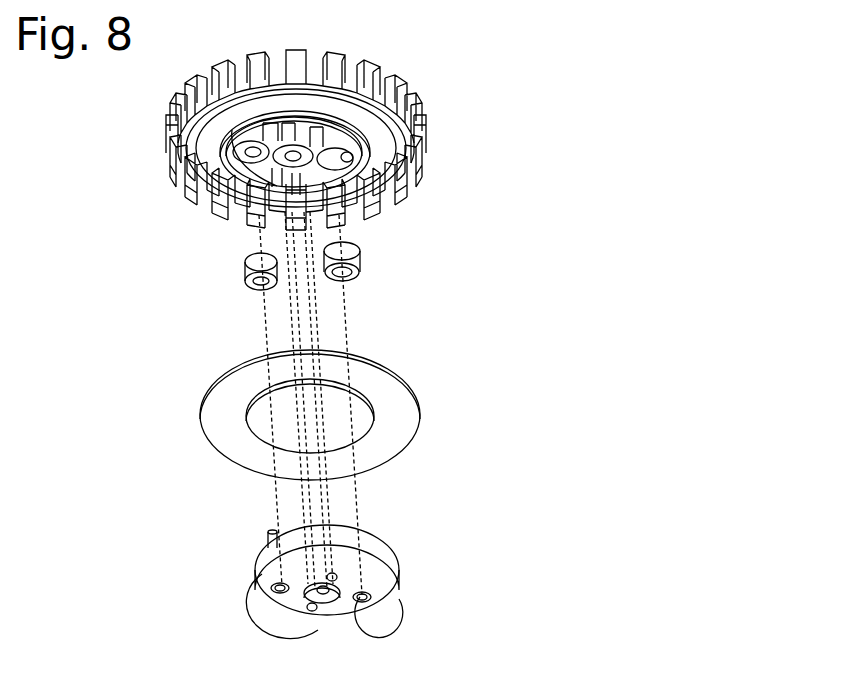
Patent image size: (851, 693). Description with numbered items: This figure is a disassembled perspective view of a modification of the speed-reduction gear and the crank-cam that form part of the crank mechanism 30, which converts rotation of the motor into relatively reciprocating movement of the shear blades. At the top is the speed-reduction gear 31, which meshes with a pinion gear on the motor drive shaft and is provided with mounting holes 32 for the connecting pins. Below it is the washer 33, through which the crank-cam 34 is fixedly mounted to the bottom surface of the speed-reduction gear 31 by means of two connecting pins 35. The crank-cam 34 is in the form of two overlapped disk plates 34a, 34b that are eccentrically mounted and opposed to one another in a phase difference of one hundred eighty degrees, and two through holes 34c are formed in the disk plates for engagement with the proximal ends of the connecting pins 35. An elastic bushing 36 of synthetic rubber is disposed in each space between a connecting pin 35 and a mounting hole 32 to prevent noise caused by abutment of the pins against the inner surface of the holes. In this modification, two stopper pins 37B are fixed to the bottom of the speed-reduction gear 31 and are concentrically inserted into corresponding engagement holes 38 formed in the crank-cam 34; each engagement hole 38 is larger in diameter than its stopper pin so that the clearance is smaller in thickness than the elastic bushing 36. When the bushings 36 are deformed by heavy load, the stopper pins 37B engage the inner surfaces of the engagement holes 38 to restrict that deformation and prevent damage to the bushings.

The crank mechanism 30 is at (537, 418).
The speed-reduction gear 31 is at (422, 103).
The mounting holes 32 is at (422, 178).
The washer 33 is at (403, 405).
The crank-cam 34 is at (493, 578).
The disk plate 34a is at (382, 610).
The disk plate 34b is at (383, 590).
The through holes 34c is at (243, 597).
The connecting pins 35 is at (268, 538).
The elastic bushing 36 is at (247, 267).
The stopper pins 37B is at (348, 150).
The engagement holes 38 is at (307, 610).